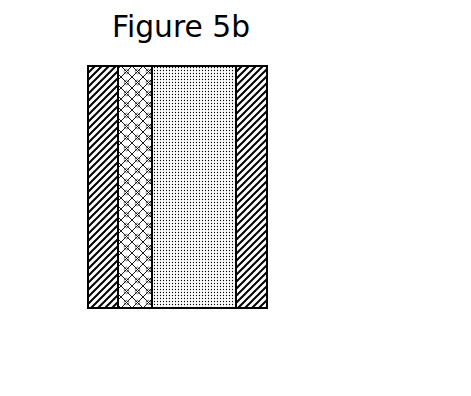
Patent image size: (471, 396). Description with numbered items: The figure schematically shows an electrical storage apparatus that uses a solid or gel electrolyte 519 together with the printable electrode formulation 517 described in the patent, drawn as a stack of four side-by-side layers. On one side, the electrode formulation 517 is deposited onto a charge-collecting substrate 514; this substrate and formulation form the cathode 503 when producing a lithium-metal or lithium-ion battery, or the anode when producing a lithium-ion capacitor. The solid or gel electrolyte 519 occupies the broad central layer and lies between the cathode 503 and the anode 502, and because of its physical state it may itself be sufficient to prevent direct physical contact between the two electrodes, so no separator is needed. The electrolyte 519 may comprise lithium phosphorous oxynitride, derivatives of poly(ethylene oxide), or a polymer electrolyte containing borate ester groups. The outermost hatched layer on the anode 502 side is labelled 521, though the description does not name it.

The anode 502 is at (291, 324).
The cathode 503 is at (70, 324).
The charge-collecting substrate 514 is at (105, 203).
The electrode formulation 517 is at (135, 293).
The solid or gel electrolyte 519 is at (205, 293).
The second current collector layer 521 is at (253, 202).